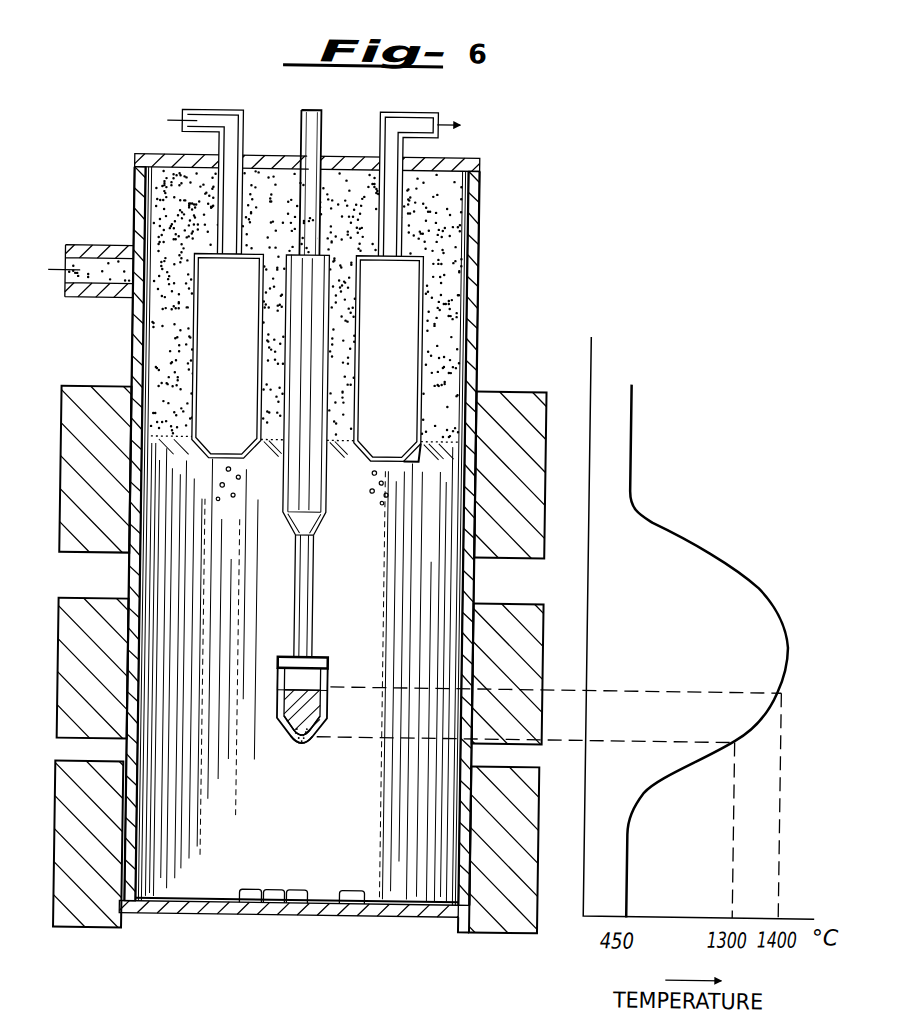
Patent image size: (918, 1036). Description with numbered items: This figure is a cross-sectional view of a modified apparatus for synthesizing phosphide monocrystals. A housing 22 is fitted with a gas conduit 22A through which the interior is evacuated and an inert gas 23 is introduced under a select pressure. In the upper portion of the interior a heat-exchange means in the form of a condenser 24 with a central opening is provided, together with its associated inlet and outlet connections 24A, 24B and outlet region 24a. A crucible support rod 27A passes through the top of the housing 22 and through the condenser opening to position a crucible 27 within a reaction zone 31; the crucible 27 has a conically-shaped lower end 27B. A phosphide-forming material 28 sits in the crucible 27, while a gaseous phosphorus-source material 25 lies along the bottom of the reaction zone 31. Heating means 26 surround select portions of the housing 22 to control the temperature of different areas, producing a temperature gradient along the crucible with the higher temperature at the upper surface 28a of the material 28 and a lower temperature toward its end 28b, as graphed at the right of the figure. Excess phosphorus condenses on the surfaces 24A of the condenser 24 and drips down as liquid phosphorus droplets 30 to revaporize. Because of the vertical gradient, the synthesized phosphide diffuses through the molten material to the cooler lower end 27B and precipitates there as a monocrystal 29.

The housing 22 is at (476, 262).
The gas conduit 22A is at (101, 301).
The inert gas 23 is at (441, 212).
The condenser 24 is at (403, 311).
The surfaces of the heat-exchange means 24A is at (194, 111).
The outlet pipe 24B is at (423, 111).
The crucible outlet 24a is at (417, 467).
The gaseous phosphorus-source material 25 is at (303, 903).
The heating means 26 is at (520, 389).
The crucible 27 is at (317, 652).
The crucible support rod 27A is at (319, 520).
The conically-shaped lower end 27B is at (314, 748).
The phosphide-forming material 28 is at (316, 712).
The upper surface 28a is at (330, 680).
The lower end of material 28b is at (288, 732).
The gallium phosphide monocrystal 29 is at (300, 748).
The liquid phosphorus droplets 30 is at (238, 487).
The reaction zone 31 is at (411, 594).